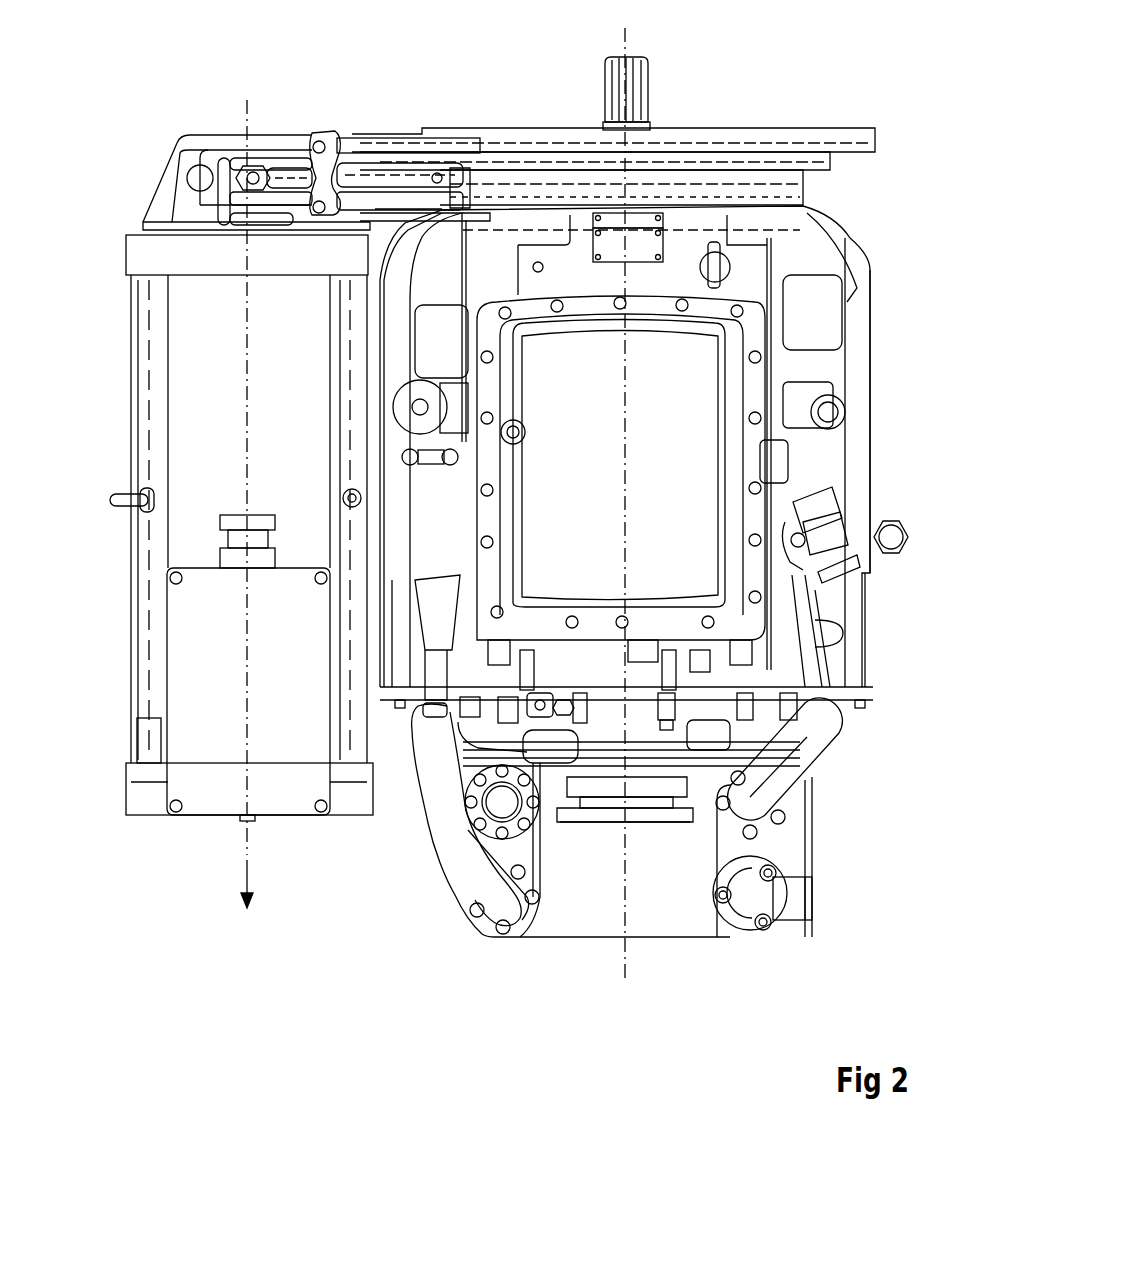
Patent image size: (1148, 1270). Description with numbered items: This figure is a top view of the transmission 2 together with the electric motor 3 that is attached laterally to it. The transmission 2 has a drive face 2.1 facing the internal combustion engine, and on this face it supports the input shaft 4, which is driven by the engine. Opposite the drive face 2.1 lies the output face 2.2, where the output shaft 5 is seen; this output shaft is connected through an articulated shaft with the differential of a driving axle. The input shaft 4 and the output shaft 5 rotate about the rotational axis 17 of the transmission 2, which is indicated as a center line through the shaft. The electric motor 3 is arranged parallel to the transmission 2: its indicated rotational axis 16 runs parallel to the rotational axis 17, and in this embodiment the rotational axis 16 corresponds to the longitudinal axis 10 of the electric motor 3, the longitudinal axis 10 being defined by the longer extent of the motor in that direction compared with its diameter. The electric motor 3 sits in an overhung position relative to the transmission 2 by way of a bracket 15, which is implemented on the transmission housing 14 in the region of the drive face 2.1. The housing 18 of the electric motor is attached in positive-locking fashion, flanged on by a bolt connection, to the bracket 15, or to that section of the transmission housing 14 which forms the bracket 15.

The transmission 2 is at (672, 968).
The drive face 2.1 is at (745, 128).
The output face 2.2 is at (745, 940).
The electric motor 3 is at (203, 830).
The input shaft 4 is at (648, 82).
The output shaft 5 is at (590, 830).
The longitudinal axis 10 is at (249, 870).
The transmission housing 14 is at (858, 345).
The bracket 15 is at (336, 127).
The rotational axis 16 is at (247, 105).
The rotational axis 17 is at (625, 30).
The housing 18 is at (178, 390).